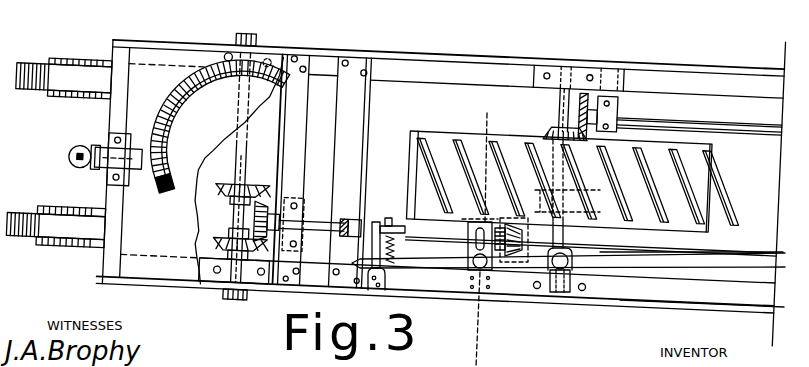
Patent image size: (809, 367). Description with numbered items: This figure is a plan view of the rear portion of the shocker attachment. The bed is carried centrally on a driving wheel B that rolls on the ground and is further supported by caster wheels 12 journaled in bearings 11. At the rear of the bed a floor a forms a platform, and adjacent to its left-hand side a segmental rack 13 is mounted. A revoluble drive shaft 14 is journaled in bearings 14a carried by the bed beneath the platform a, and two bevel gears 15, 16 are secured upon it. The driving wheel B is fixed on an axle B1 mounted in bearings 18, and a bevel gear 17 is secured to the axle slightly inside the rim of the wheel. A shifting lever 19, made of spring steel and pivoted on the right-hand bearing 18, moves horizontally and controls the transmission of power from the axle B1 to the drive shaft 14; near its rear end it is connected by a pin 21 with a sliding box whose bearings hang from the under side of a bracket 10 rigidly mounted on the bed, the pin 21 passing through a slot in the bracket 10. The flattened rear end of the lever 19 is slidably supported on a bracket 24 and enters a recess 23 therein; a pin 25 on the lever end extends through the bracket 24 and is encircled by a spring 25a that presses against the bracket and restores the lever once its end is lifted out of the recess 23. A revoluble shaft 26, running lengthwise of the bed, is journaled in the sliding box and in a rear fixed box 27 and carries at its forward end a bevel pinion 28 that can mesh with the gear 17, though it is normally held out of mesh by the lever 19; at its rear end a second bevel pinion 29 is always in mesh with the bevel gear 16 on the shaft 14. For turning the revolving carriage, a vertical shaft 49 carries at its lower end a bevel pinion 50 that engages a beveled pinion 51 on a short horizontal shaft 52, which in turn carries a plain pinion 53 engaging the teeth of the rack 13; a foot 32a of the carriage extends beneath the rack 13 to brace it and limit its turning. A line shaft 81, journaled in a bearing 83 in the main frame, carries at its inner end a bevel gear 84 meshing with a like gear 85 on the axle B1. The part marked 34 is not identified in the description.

The bracket 10 is at (493, 111).
The bearings 11 is at (72, 60).
The caster wheels 12 is at (35, 78).
The segmental rack 13 is at (218, 127).
The drive shaft 14 is at (250, 157).
The bearings 14a is at (218, 296).
The bevel gear 15 is at (279, 178).
The bevel gear 16 is at (225, 237).
The bevel gear 17 is at (596, 215).
The bearings 18 is at (568, 296).
The shifting lever 19 is at (673, 260).
The pin 21 is at (480, 272).
The slot or recess 23 is at (372, 250).
The bracket 24 is at (381, 220).
The pin 25 is at (419, 215).
The spring 25a is at (393, 270).
The revoluble shaft 26 is at (320, 223).
The rear fixed box 27 is at (296, 219).
The bevel pinion 28 is at (520, 240).
The second bevel pinion 29 is at (266, 270).
The foot 32a is at (178, 127).
The bottom rail 34 is at (692, 294).
The shaft 49 is at (69, 158).
The bevel pinion 50 is at (72, 146).
The beveled pinion 51 is at (96, 144).
The short horizontal shaft 52 is at (112, 171).
The plain pinion 53 is at (167, 166).
The line shaft 81 is at (732, 121).
The bearing 83 is at (618, 99).
The bevel gear 84 is at (618, 113).
The bevel gear 85 is at (544, 132).
The driving wheel B is at (510, 195).
The axle B1 is at (550, 109).
The floor a is at (164, 203).